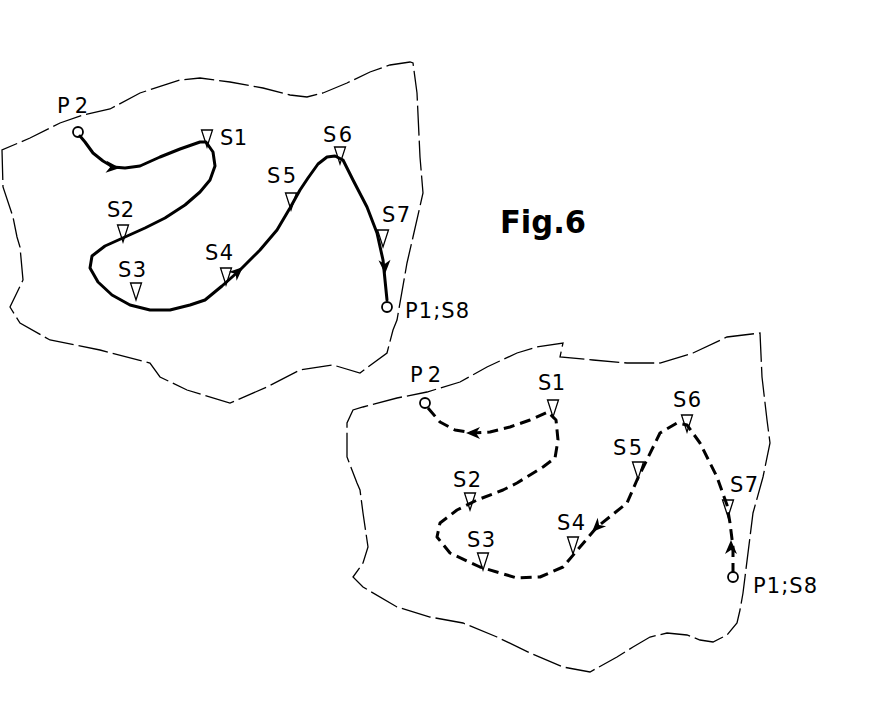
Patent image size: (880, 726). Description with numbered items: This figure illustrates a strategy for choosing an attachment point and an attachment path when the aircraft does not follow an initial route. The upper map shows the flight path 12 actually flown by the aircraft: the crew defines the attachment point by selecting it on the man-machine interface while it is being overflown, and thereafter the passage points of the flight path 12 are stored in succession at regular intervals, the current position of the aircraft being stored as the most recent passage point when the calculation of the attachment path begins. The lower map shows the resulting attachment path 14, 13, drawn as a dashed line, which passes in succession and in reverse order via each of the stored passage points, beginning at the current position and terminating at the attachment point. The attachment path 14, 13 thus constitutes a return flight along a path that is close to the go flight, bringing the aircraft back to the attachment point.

The flight path 12 is at (150, 157).
The attachment path 14 is at (582, 438).
The reference trajectory 13 is at (560, 438).